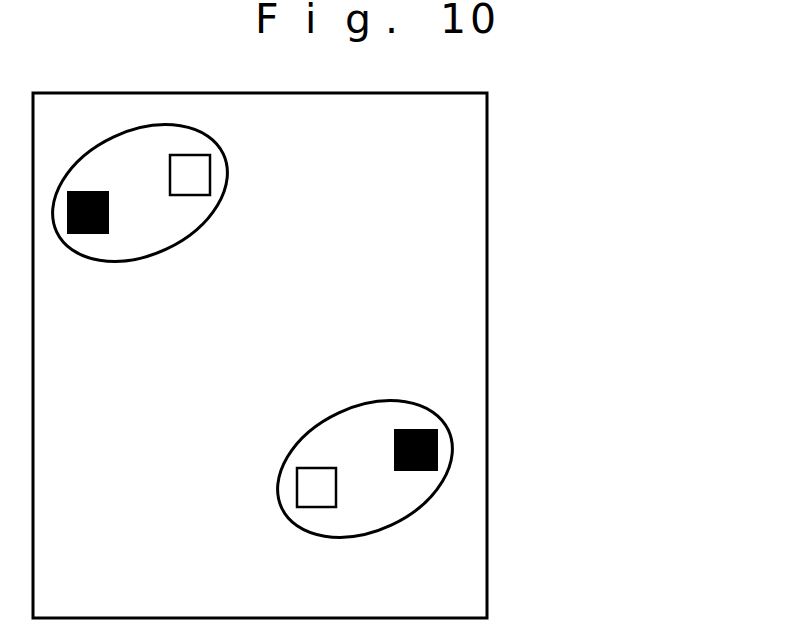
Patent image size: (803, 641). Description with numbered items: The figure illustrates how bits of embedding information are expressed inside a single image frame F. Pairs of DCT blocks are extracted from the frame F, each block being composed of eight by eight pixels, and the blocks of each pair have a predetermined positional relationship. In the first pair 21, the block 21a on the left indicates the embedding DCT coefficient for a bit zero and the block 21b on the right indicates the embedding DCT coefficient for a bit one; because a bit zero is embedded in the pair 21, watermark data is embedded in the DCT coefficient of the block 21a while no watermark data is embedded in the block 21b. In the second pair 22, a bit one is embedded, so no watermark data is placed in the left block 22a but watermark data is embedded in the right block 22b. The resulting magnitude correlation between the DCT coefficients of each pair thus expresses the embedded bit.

The frame F is at (487, 332).
The block pair 21 is at (226, 158).
The block 21a is at (87, 233).
The block 21b is at (190, 195).
The block pair 22 is at (363, 405).
The block 22a is at (315, 507).
The block 22b is at (417, 470).